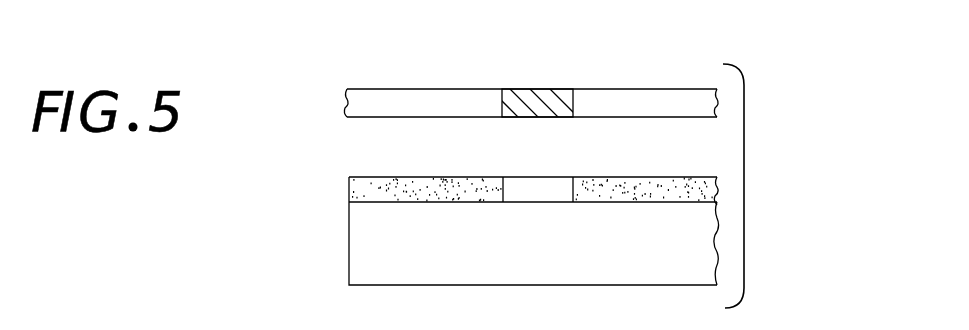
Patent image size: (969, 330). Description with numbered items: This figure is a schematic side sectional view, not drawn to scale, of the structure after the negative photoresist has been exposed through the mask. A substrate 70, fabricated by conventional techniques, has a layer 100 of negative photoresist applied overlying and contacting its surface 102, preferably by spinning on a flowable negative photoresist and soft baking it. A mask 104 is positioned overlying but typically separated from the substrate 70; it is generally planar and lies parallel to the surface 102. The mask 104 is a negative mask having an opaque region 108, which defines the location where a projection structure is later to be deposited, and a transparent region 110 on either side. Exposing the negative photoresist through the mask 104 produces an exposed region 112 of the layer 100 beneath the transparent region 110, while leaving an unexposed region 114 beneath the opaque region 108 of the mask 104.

The substrate 70 is at (362, 246).
The layer of negative photoresist 100 is at (348, 180).
The surface of the substrate 102 is at (366, 194).
The mask 104 is at (380, 90).
The opaque region 108 is at (537, 94).
The transparent region 110 is at (428, 98).
The exposed region 112 is at (413, 195).
The unexposed region 114 is at (536, 192).